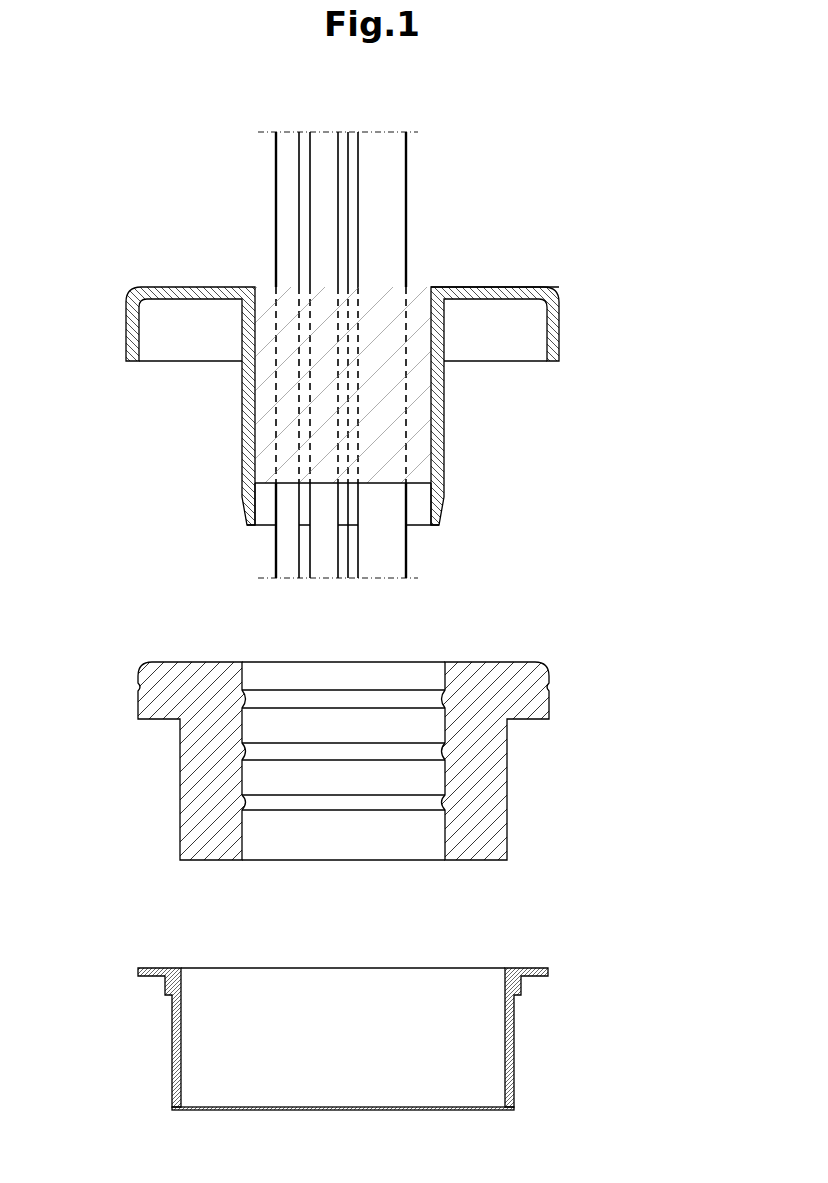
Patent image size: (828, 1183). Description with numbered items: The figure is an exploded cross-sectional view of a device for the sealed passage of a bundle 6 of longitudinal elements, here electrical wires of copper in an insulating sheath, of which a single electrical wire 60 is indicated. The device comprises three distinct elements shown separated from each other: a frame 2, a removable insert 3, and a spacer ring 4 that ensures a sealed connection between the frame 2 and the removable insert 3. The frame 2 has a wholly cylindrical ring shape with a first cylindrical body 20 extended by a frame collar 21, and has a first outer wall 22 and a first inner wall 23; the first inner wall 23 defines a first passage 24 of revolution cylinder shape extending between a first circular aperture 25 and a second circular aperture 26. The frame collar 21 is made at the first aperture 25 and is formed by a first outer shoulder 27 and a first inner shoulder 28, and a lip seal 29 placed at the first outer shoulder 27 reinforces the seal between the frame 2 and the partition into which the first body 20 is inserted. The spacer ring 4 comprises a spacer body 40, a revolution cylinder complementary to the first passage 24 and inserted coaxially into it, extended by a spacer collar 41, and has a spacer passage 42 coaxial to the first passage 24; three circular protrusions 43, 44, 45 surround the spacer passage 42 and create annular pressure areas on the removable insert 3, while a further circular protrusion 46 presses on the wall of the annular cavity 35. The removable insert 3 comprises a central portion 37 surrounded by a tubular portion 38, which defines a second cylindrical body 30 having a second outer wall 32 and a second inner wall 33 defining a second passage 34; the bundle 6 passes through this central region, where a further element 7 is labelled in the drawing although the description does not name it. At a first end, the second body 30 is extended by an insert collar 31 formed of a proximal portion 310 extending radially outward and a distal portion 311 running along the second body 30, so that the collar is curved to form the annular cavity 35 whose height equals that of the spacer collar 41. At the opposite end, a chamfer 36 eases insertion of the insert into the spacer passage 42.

The frame 2 is at (363, 1032).
The first cylindrical body 20 is at (521, 1060).
The frame collar 21 is at (531, 961).
The first outer wall 22 is at (515, 1093).
The first inner wall 23 is at (505, 1081).
The first passage 24 is at (442, 963).
The first circular aperture 25 is at (213, 967).
The second circular aperture 26 is at (237, 1112).
The first outer shoulder 27 is at (145, 985).
The first inner shoulder 28 is at (150, 967).
The lip seal 29 is at (160, 982).
The removable insert 3 is at (379, 384).
The second cylindrical body 30 is at (364, 386).
The insert collar 31 is at (379, 361).
The proximal portion 310 is at (488, 284).
The distal portion 311 is at (565, 338).
The second outer wall 32 is at (446, 465).
The second inner wall 33 is at (431, 506).
The second passage 34 is at (268, 282).
The annular cavity 35 is at (185, 336).
The chamfer 36 is at (236, 515).
The central portion 37 is at (415, 286).
The tubular portion 38 is at (241, 476).
The spacer ring 4 is at (361, 748).
The spacer body 40 is at (517, 806).
The spacer collar 41 is at (525, 656).
The spacer passage 42 is at (353, 658).
The circular protrusion 43 is at (265, 698).
The circular protrusion 44 is at (308, 748).
The circular protrusion 45 is at (263, 802).
The circular protrusion 46 is at (137, 686).
The bundle of longitudinal elements 6 is at (294, 342).
The electrical wire 60 is at (276, 158).
The potting compound 7 is at (263, 300).